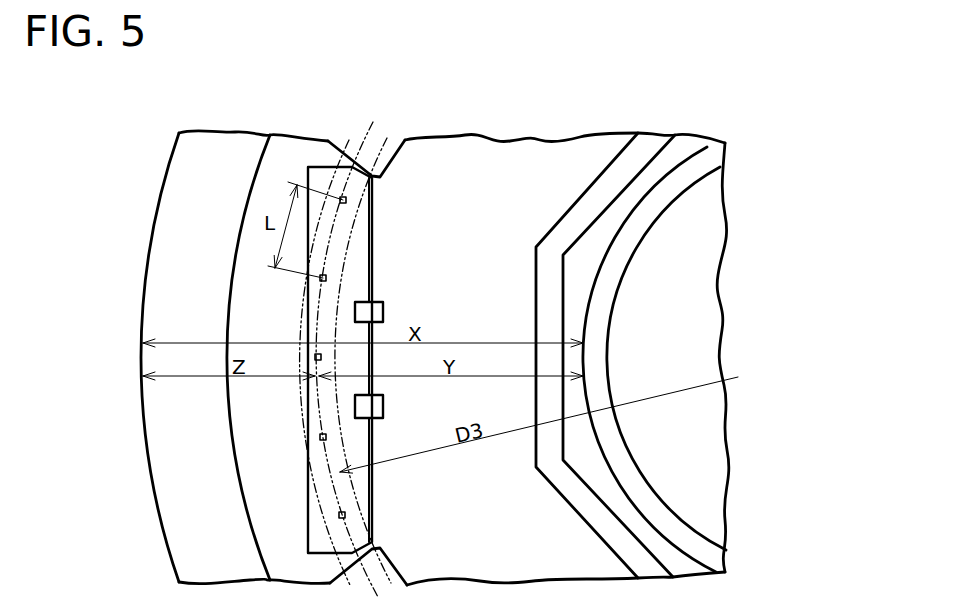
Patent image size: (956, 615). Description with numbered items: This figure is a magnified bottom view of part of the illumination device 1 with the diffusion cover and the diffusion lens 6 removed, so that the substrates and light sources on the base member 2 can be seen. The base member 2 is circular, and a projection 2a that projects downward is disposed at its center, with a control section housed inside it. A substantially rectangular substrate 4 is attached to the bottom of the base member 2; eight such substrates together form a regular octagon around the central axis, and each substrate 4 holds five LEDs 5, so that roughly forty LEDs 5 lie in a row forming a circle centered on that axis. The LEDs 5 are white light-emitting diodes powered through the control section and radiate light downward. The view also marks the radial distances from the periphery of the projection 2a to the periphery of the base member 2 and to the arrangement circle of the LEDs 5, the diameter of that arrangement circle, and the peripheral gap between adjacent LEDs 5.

The illumination device 1 is at (117, 128).
The base member 2 is at (540, 140).
The projection 2a is at (717, 343).
The substrate 4 is at (373, 258).
The LED 5 is at (346, 200).
The diffusion lens 6 is at (323, 518).